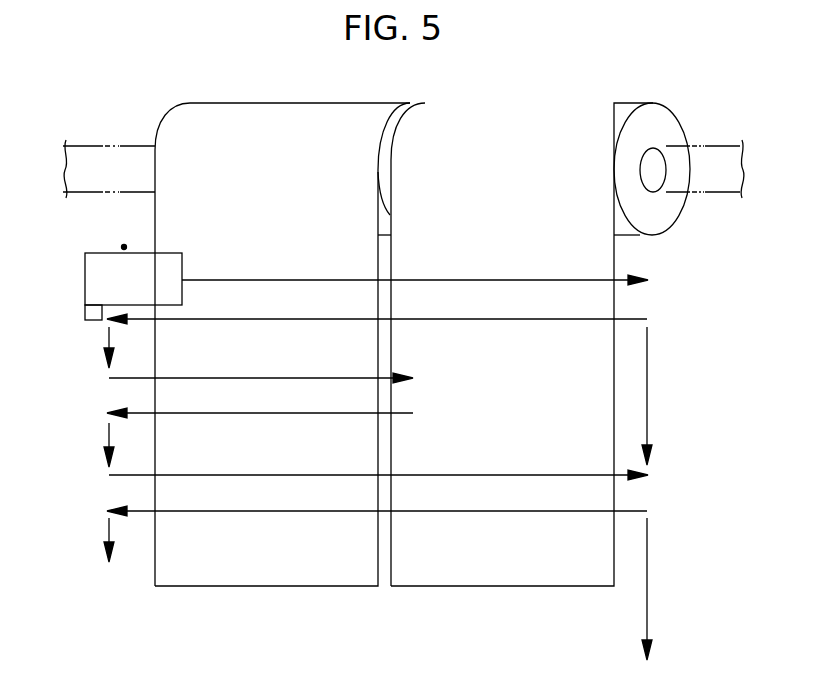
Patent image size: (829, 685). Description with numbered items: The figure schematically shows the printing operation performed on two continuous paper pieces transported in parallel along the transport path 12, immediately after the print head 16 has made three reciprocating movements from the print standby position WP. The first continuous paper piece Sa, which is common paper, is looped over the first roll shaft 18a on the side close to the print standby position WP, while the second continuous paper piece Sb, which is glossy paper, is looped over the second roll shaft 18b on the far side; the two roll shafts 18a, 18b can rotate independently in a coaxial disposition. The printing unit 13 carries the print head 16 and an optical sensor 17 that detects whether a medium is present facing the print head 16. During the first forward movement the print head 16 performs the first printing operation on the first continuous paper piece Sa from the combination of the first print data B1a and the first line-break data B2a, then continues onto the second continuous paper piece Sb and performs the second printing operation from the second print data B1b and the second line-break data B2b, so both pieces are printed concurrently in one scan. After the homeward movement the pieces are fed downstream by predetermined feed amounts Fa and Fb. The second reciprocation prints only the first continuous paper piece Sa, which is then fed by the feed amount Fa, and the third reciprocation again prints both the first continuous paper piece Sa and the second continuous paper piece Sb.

The transport path 12 is at (160, 95).
The printing unit 13 is at (105, 275).
The print head 16 is at (85, 280).
The optical sensor 17 is at (85, 311).
The first roll shaft 18a is at (89, 141).
The second roll shaft 18b is at (713, 142).
The first continuous paper piece Sa is at (297, 111).
The second continuous paper piece Sb is at (530, 111).
The print standby position WP is at (124, 244).
The feed amount Fa is at (109, 342).
The feed amount Fb is at (649, 388).
The first print data B1a is at (253, 292).
The first line-break data B2a is at (260, 375).
The second print data B1b is at (492, 292).
The second line-break data B2b is at (516, 372).